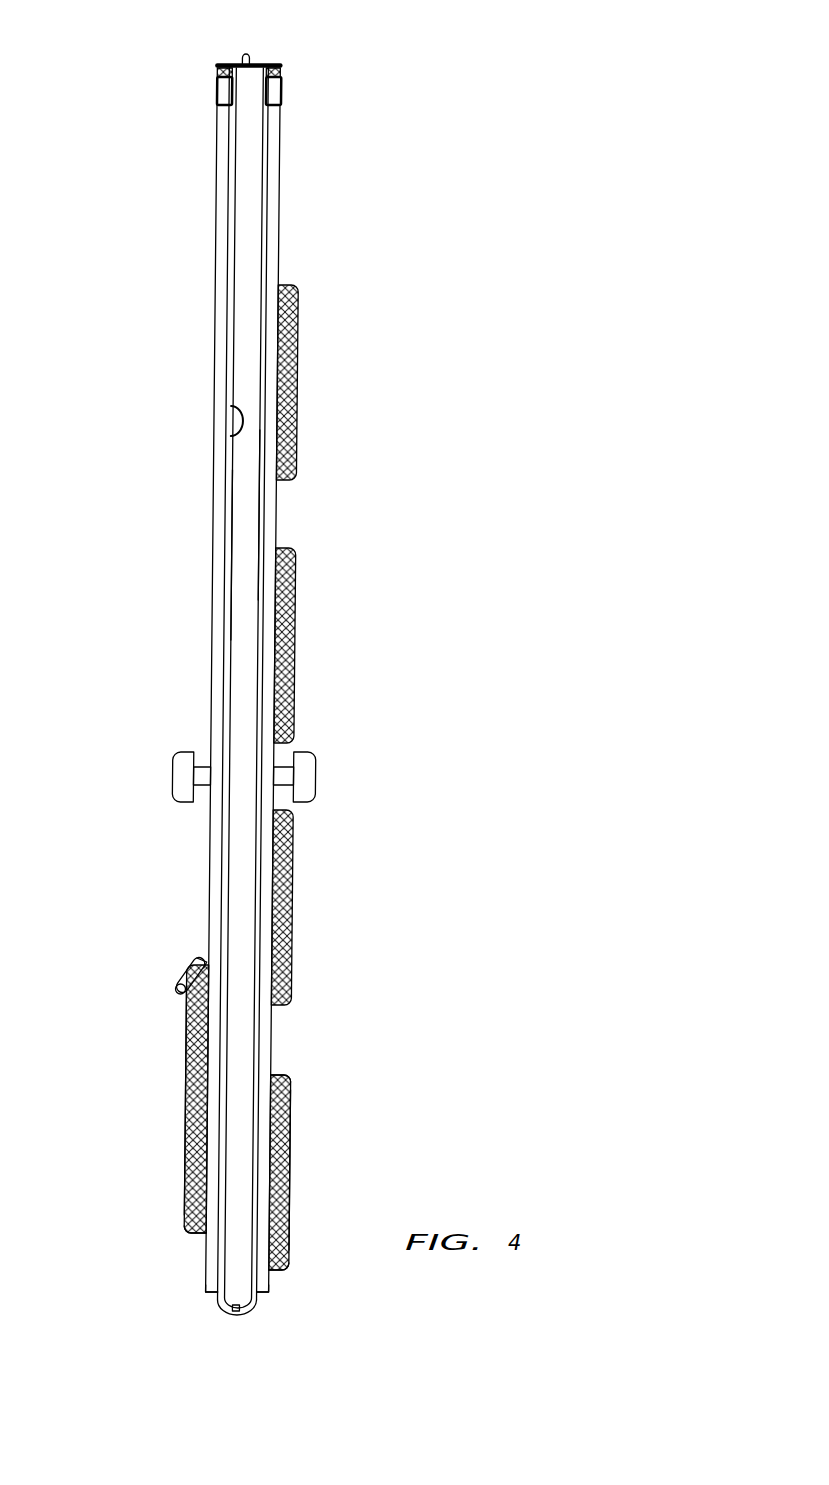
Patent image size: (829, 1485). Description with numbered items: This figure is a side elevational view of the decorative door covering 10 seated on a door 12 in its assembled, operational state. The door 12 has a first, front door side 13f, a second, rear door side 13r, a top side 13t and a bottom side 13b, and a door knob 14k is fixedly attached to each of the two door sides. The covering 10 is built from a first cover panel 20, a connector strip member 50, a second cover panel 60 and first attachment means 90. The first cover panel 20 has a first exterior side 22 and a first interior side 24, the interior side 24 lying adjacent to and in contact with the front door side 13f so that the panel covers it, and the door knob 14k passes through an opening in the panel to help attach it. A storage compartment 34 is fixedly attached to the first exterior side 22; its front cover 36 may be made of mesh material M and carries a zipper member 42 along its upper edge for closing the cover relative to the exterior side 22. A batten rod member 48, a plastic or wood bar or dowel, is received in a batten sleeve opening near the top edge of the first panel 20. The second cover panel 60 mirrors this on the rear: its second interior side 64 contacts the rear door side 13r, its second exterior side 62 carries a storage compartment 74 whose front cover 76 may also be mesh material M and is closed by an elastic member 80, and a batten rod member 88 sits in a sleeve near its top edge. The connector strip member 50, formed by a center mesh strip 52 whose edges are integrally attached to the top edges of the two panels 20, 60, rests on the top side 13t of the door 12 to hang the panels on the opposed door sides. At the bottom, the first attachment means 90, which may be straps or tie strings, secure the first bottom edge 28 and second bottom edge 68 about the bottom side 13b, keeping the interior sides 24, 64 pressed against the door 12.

The decorative door covering 10 is at (323, 378).
The door 12 is at (241, 1031).
The top side 13t is at (245, 60).
The bottom side 13b is at (243, 1316).
The first door side 13f is at (233, 550).
The second door side 13r is at (261, 514).
The door knob 14k is at (316, 779).
The first cover panel 20 is at (219, 373).
The first exterior side 22 is at (215, 348).
The first interior side 24 is at (230, 431).
The first bottom edge 28 is at (214, 1295).
The storage compartment 34 is at (178, 1167).
The front cover 36 is at (185, 1100).
The zipper member 42 is at (178, 973).
The batten rod member 48 is at (220, 101).
The connector strip member 50 is at (277, 65).
The center mesh strip 52 is at (223, 65).
The second cover panel 60 is at (281, 246).
The second exterior side 62 is at (280, 195).
The second interior side 64 is at (280, 255).
The second bottom edge 68 is at (262, 1293).
The storage compartment 74 is at (288, 1190).
The front cover 76 is at (289, 1125).
The elastic member 80 is at (289, 1077).
The batten rod member 88 is at (278, 93).
The first attachment means 90 is at (244, 1329).
The mesh material M is at (189, 1218).